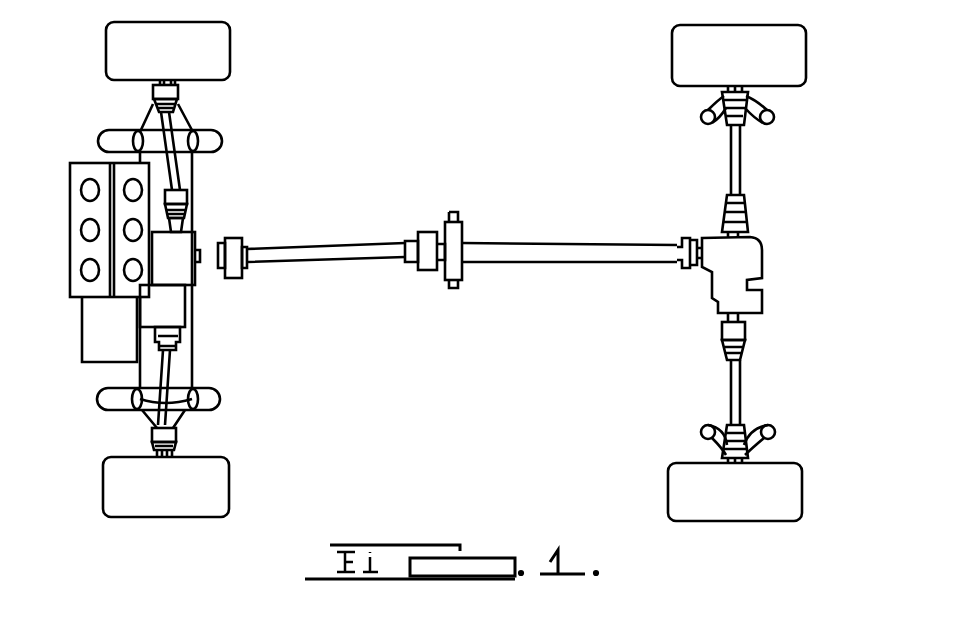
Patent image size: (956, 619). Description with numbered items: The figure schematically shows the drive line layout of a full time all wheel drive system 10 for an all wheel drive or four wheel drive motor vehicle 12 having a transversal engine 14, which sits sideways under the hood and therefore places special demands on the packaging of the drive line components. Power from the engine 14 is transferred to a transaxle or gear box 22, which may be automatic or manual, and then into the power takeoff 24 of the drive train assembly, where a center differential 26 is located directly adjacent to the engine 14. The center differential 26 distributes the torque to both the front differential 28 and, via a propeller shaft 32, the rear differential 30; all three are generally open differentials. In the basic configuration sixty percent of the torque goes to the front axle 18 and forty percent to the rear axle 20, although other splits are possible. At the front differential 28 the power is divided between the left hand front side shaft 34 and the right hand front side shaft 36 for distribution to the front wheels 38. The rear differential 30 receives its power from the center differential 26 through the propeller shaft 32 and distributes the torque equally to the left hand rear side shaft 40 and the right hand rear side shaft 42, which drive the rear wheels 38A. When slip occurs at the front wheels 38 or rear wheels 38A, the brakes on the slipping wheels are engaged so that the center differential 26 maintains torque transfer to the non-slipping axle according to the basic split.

The full time all wheel drive system 10 is at (374, 95).
The motor vehicle 12 is at (530, 148).
The transversal engine 14 is at (78, 183).
The front axle 18 is at (188, 338).
The rear axle 20 is at (744, 340).
The transaxle or gear box 22 is at (97, 332).
The power takeoff 24 is at (182, 258).
The center differential 26 is at (170, 303).
The front differential 28 is at (172, 243).
The rear differential 30 is at (747, 258).
The propeller shaft 32 is at (538, 248).
The left hand front side shaft 34 is at (165, 418).
The right hand front side shaft 36 is at (173, 172).
The front wheels 38 is at (215, 55).
The rear wheels 38A is at (802, 476).
The left hand rear side shaft 40 is at (731, 375).
The right hand rear side shaft 42 is at (731, 152).